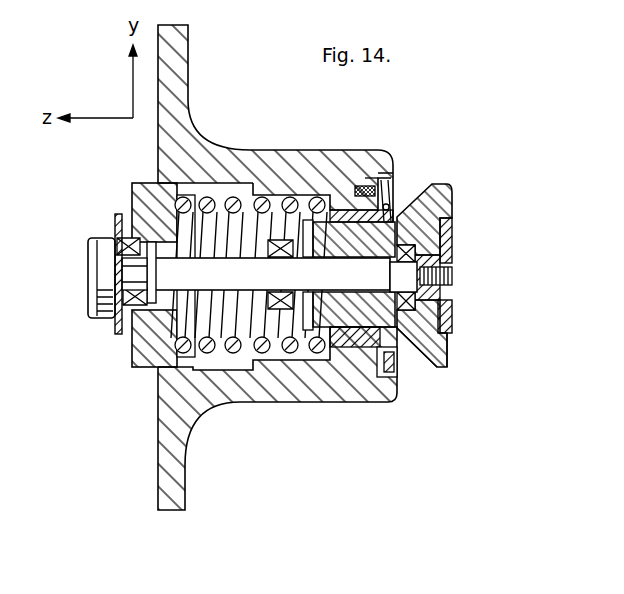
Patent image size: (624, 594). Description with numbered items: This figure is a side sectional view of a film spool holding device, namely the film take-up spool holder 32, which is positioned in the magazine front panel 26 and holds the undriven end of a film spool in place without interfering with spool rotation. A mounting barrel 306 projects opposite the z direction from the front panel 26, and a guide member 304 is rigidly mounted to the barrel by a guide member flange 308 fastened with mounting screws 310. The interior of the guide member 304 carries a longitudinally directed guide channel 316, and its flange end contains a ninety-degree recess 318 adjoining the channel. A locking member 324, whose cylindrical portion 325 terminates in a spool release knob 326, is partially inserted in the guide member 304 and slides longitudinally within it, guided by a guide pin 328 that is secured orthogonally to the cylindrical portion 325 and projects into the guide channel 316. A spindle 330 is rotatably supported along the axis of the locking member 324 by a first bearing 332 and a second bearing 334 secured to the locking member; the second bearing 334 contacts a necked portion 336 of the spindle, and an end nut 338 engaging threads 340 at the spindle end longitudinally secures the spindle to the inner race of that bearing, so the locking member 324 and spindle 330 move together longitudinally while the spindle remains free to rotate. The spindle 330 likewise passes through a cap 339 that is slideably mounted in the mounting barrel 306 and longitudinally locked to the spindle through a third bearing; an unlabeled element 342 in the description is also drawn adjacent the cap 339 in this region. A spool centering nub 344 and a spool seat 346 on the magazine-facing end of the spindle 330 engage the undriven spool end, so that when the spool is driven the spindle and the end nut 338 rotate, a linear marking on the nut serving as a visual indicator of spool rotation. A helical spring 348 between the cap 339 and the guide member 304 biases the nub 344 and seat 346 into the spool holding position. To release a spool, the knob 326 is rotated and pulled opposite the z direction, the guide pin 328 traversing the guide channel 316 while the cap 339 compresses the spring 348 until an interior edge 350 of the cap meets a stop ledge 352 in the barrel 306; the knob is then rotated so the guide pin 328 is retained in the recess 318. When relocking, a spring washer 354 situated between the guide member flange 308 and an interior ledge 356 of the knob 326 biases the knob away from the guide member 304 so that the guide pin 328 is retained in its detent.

The magazine front panel 26 is at (192, 44).
The film take-up spool holder 32 is at (72, 255).
The guide member 304 is at (343, 340).
The mounting barrel 306 is at (297, 170).
The guide member flange 308 is at (396, 352).
The mounting screws 310 is at (363, 178).
The guide channel 316 is at (362, 186).
The recess 318 is at (388, 220).
The locking member 324 is at (442, 368).
The locking member cylindrical portion 325 is at (334, 252).
The spool release knob 326 is at (450, 360).
The guide pin 328 is at (333, 150).
The spindle 330 is at (135, 340).
The first bearing 332 is at (285, 257).
The second bearing 334 is at (450, 316).
The necked portion 336 is at (403, 280).
The end nut 338 is at (453, 238).
The cap 339 is at (135, 190).
The threads 340 is at (455, 281).
The bearing 342 is at (113, 257).
The spool centering nub 344 is at (89, 288).
The spool seat 346 is at (115, 312).
The helical spring 348 is at (232, 200).
The interior edge 350 is at (213, 183).
The stop ledge 352 is at (258, 197).
The spring washer 354 is at (402, 220).
The interior ledge 356 is at (393, 357).